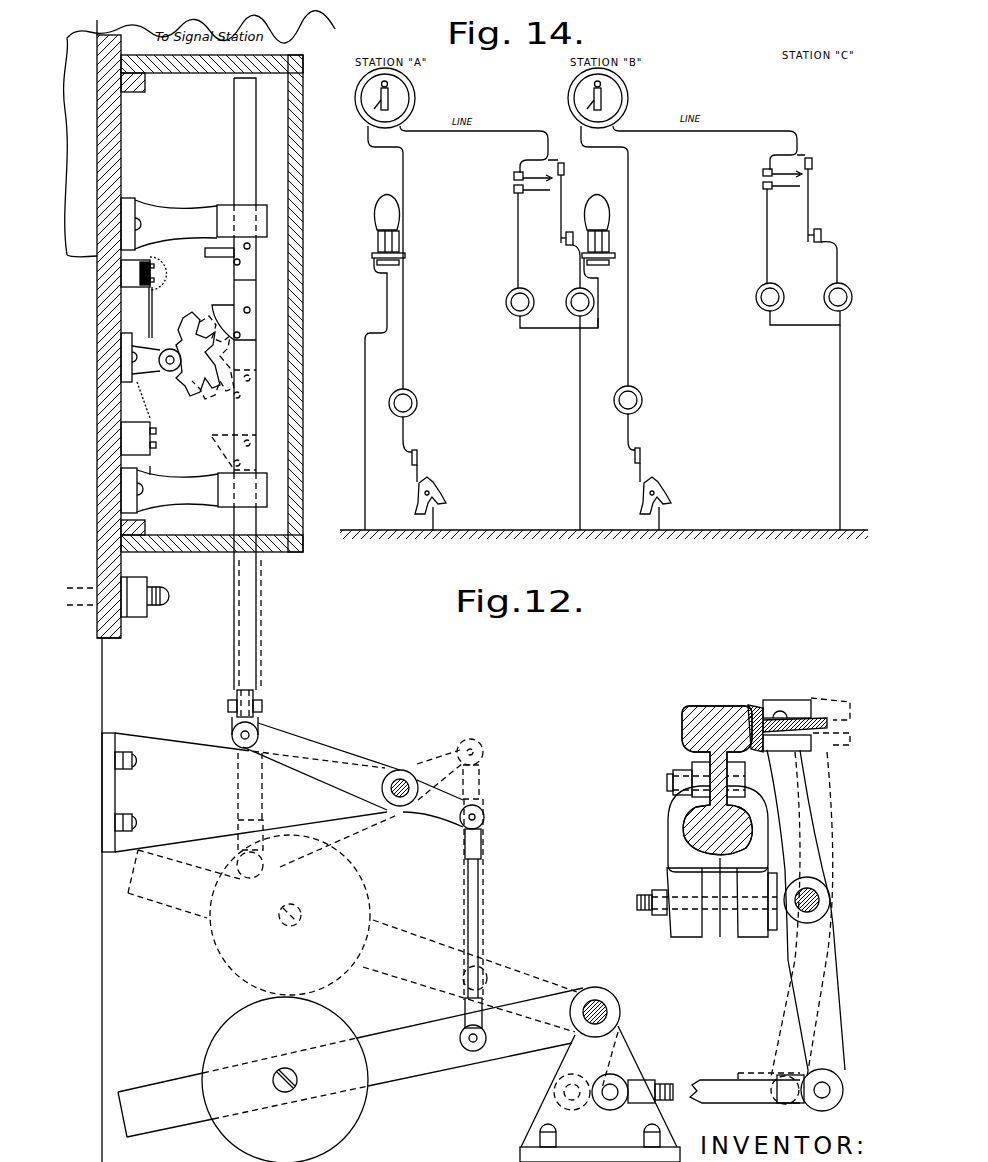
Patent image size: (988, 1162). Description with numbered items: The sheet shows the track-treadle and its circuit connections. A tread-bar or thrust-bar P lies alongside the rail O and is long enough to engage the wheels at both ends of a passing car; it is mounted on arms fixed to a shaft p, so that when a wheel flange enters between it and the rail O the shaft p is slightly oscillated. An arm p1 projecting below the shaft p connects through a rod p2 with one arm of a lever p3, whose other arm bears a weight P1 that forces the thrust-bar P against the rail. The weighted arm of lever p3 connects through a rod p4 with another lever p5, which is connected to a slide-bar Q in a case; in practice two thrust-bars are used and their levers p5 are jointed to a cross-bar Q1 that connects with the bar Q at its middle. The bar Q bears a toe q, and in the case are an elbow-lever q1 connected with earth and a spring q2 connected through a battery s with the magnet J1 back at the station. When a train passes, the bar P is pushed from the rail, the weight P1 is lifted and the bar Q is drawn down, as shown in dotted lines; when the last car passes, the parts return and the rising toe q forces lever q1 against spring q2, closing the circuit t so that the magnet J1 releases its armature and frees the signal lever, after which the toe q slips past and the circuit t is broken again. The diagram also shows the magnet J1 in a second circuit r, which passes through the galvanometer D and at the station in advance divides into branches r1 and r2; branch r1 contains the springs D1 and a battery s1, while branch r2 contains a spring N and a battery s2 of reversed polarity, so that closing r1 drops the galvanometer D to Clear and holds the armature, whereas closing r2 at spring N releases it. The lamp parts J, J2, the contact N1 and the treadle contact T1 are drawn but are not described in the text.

In FIG. 14, the galvanometer D is at (500, 98).
In FIG. 14, the springs D1 is at (647, 187).
In FIG. 14, the lamp base contact J is at (490, 391).
In FIG. 14, the magnet J1 is at (488, 241).
In FIG. 14, the incandescent lamp J2 is at (378, 210).
In FIG. 14, the spring N is at (682, 200).
In FIG. 14, the contact point N1 is at (698, 228).
In FIG. 14, the circuit r is at (586, 212).
In FIG. 14, the branch r1 is at (642, 238).
In FIG. 14, the branch r2 is at (709, 259).
In FIG. 14, the battery s is at (520, 401).
In FIG. 14, the battery s1 is at (638, 299).
In FIG. 14, the battery s2 is at (710, 299).
In FIG. 14, the circuit t is at (520, 376).
In FIG. 14, the armature contact T1 is at (540, 454).
In FIG. 14, the elbow-lever q1 is at (548, 503).
In FIG. 12, the elbow-lever q1 is at (218, 362).
In FIG. 14, the spring q2 is at (519, 474).
In FIG. 12, the spring q2 is at (159, 312).
In FIG. 12, the slide-bar Q is at (232, 156).
In FIG. 12, the cross-bar Q1 is at (255, 719).
In FIG. 12, the toe q is at (214, 305).
In FIG. 12, the thrust-bar P is at (752, 706).
In FIG. 12, the weight P1 is at (286, 998).
In FIG. 12, the shaft p is at (831, 900).
In FIG. 12, the arm p1 is at (816, 1018).
In FIG. 12, the rod p2 is at (747, 1088).
In FIG. 12, the lever p3 is at (520, 1020).
In FIG. 12, the rod p4 is at (479, 930).
In FIG. 12, the lever p5 is at (380, 782).
In FIG. 12, the rail O is at (717, 772).